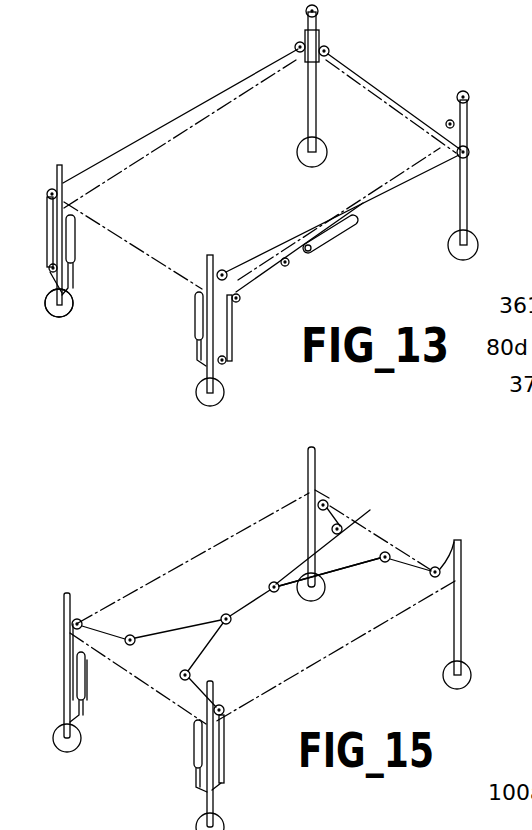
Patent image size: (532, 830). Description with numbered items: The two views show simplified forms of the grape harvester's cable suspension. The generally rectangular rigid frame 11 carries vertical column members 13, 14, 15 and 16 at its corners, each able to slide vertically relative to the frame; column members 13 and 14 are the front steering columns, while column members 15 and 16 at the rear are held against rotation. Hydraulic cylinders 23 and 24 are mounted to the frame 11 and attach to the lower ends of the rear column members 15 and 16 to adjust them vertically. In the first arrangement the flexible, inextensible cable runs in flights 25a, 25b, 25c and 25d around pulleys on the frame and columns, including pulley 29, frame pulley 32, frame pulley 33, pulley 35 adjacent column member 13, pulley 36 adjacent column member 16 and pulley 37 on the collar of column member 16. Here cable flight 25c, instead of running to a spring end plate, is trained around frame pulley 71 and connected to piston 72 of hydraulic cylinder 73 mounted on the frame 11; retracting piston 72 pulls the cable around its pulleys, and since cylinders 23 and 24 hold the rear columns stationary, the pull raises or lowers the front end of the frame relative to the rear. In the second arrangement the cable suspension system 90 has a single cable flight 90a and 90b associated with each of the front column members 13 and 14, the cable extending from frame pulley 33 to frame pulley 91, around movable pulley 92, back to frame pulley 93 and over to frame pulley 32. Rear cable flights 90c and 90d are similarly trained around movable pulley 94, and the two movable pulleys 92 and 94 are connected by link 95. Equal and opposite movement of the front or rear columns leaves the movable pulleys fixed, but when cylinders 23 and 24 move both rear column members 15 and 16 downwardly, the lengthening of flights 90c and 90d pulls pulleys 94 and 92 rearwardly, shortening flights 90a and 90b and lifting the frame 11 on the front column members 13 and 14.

In FIG. 13, the rigid frame 11 is at (189, 127).
In FIG. 15, the rigid frame 11 is at (232, 534).
In FIG. 13, the column member 13 is at (307, 130).
In FIG. 15, the column member 13 is at (308, 537).
In FIG. 13, the column member 14 is at (466, 200).
In FIG. 15, the column member 14 is at (463, 653).
In FIG. 13, the column member 15 is at (214, 378).
In FIG. 15, the column member 15 is at (213, 795).
In FIG. 13, the column member 16 is at (62, 269).
In FIG. 15, the column member 16 is at (80, 726).
In FIG. 13, the hydraulic cylinder 23 is at (195, 318).
In FIG. 15, the hydraulic cylinder 23 is at (194, 750).
In FIG. 13, the hydraulic cylinder 24 is at (73, 232).
In FIG. 15, the hydraulic cylinder 24 is at (85, 649).
In FIG. 13, the cable flight 25a is at (320, 38).
In FIG. 13, the cable flight 25b is at (468, 137).
In FIG. 13, the cable flight 25c is at (233, 358).
In FIG. 13, the cable flight 25d is at (70, 246).
In FIG. 13, the pulley 29 is at (222, 270).
In FIG. 15, the frame pulley 32 is at (432, 577).
In FIG. 13, the frame pulley 33 is at (330, 51).
In FIG. 15, the frame pulley 33 is at (329, 510).
In FIG. 13, the pulley 35 is at (295, 47).
In FIG. 13, the pulley 36 is at (50, 190).
In FIG. 13, the pulley 37 is at (62, 306).
In FIG. 13, the frame pulley 71 is at (241, 300).
In FIG. 13, the piston 72 is at (295, 260).
In FIG. 13, the hydraulic cylinder 73 is at (337, 233).
In FIG. 15, the cable suspension system 90 is at (230, 601).
In FIG. 15, the cable flight 90a is at (318, 480).
In FIG. 15, the cable flight 90b is at (462, 558).
In FIG. 15, the cable flight 90c is at (225, 772).
In FIG. 15, the cable flight 90d is at (88, 678).
In FIG. 15, the frame pulley 91 is at (371, 511).
In FIG. 15, the movable pulley 92 is at (272, 581).
In FIG. 15, the frame pulley 93 is at (390, 563).
In FIG. 15, the movable pulley 94 is at (230, 624).
In FIG. 15, the link 95 is at (283, 592).